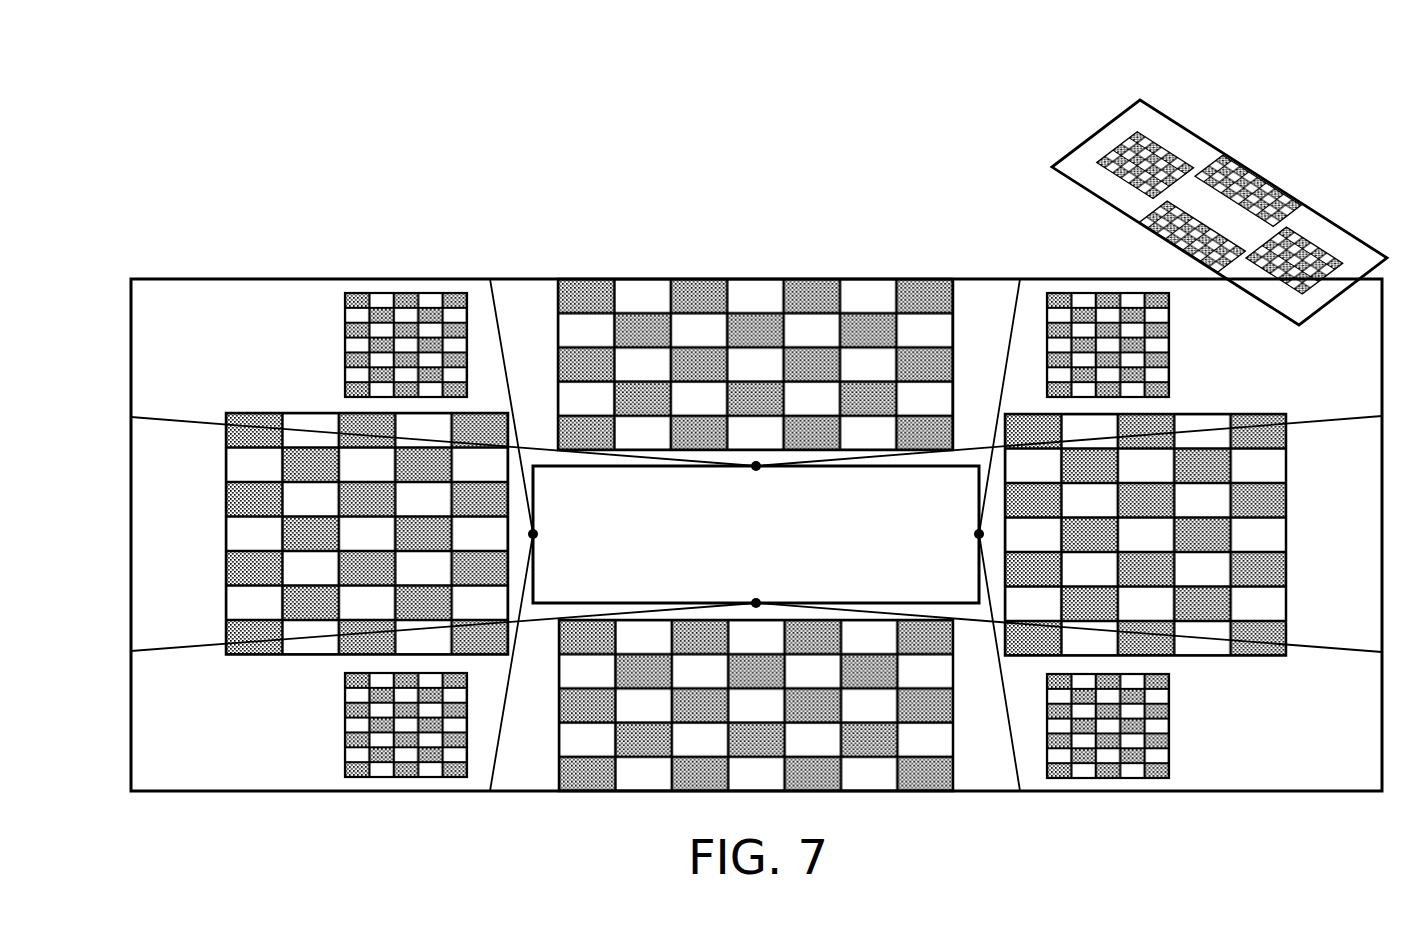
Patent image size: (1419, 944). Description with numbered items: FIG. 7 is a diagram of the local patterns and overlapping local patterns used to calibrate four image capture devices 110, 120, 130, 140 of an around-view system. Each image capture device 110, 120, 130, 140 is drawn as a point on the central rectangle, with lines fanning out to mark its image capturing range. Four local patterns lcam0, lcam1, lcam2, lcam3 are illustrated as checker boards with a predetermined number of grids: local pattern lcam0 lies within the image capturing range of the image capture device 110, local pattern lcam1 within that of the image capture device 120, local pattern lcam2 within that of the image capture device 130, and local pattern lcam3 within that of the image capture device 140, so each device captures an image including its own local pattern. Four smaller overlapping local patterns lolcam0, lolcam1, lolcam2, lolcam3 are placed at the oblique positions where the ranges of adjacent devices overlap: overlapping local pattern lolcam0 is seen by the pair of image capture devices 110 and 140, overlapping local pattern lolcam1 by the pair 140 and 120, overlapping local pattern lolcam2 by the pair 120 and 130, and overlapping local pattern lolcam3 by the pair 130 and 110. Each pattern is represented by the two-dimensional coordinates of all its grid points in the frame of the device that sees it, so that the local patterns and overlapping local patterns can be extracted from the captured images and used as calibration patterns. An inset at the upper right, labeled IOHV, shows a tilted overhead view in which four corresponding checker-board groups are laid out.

The image capture device 110 is at (537, 534).
The image capture device 120 is at (975, 534).
The image capture device 130 is at (756, 599).
The image capture device 140 is at (756, 470).
The local pattern lcam0 is at (240, 413).
The local pattern lcam1 is at (1262, 413).
The local pattern lcam2 is at (929, 792).
The local pattern lcam3 is at (868, 279).
The overlapping local pattern lolcam0 is at (385, 293).
The overlapping local pattern lolcam1 is at (1060, 293).
The overlapping local pattern lolcam2 is at (1130, 777).
The overlapping local pattern lolcam3 is at (385, 777).
The overhead view image IOHV is at (1167, 177).